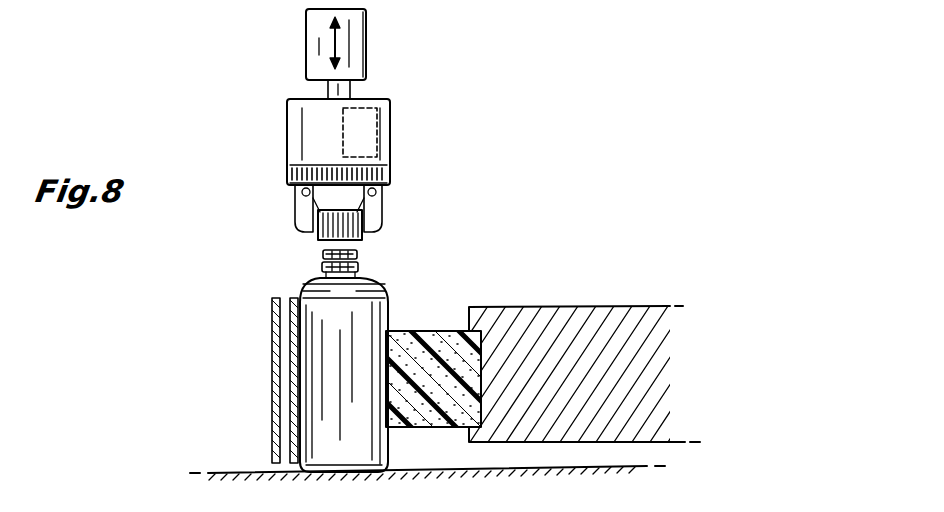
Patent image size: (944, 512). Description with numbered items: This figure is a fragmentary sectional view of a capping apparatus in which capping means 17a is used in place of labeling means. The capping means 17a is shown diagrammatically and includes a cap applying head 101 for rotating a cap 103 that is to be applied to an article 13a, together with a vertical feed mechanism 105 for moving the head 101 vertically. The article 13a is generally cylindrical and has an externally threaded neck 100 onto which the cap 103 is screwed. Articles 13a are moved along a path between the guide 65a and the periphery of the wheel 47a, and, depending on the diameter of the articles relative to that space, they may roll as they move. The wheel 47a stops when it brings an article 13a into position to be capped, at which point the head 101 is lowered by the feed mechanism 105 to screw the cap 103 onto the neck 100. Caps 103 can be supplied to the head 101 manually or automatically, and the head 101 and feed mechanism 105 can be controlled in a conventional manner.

The vertical feed mechanism 105 is at (363, 25).
The capping means 17a is at (337, 124).
The cap applying head 101 is at (287, 114).
The cap 103 is at (318, 235).
The externally threaded neck 100 is at (355, 264).
The article 13a is at (315, 340).
The guide 65a is at (272, 318).
The wheel 47a is at (433, 328).